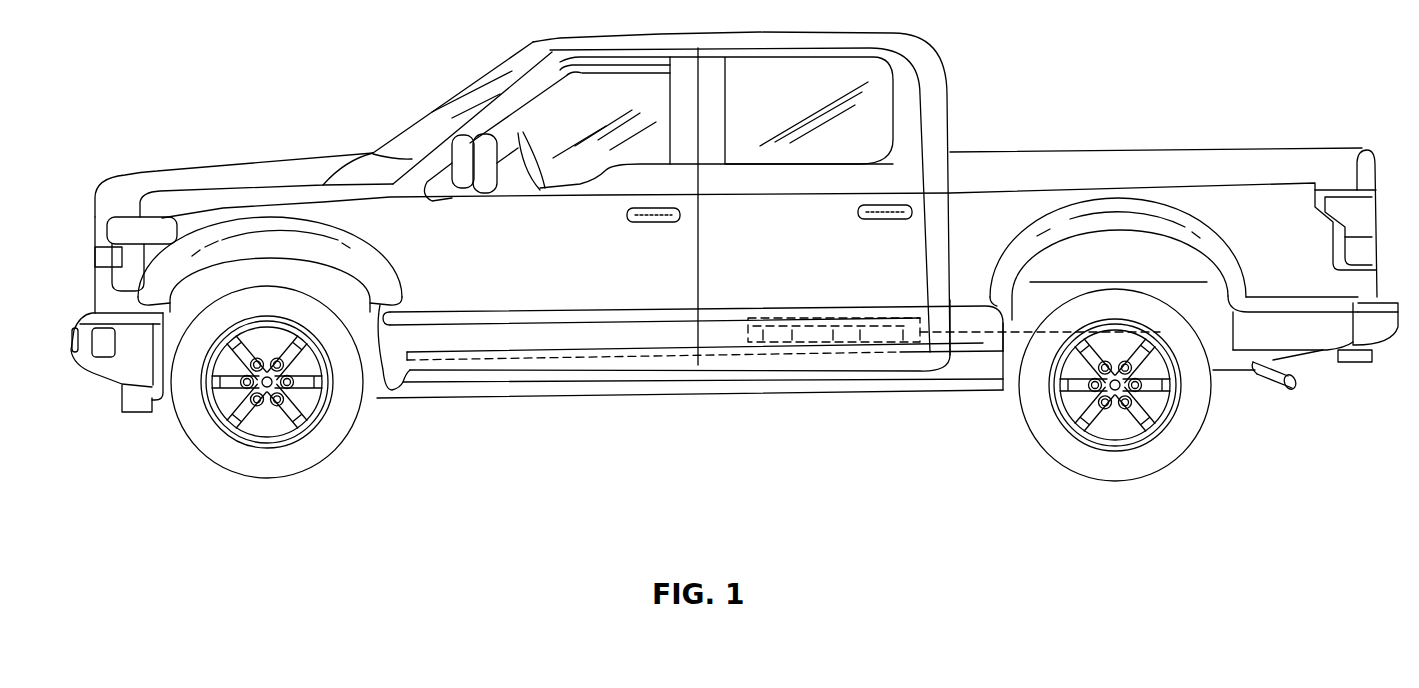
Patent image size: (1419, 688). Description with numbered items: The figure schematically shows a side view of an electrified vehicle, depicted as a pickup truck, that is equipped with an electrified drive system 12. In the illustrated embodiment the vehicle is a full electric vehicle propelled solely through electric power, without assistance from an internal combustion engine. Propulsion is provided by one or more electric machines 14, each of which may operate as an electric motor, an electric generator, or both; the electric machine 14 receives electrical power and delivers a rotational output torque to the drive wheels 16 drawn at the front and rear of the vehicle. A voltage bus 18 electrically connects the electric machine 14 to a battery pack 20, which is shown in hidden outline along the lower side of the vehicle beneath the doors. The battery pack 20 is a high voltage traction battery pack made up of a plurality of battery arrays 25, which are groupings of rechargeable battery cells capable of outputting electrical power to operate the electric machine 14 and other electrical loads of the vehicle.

The electrified drive system 12 is at (982, 353).
The electric machine 14 is at (1172, 334).
The drive wheels 16 is at (267, 480).
The voltage bus 18 is at (1017, 345).
The battery pack 20 is at (832, 360).
The battery arrays 25 is at (790, 335).